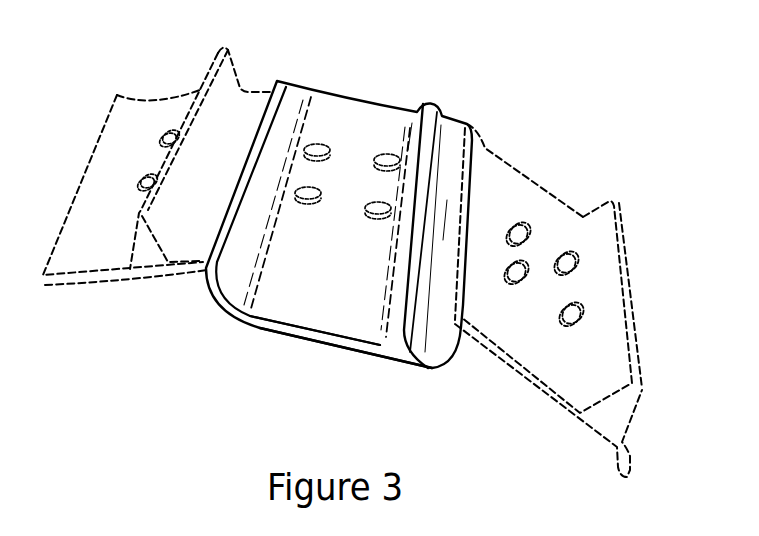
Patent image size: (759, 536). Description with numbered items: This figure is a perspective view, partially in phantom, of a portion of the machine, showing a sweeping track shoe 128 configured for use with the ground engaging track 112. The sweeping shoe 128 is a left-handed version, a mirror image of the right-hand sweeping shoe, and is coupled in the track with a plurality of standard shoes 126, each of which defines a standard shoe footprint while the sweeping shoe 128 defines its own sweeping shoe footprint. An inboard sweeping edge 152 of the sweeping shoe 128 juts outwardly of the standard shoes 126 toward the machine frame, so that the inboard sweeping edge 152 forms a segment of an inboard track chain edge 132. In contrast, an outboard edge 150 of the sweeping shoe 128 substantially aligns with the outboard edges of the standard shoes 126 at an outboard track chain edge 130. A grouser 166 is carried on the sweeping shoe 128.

The ground engaging track 112 is at (538, 178).
The standard shoes 126 is at (87, 287).
The sweeping track shoe 128 is at (332, 115).
The outboard track chain edge 130 is at (503, 163).
The inboard track chain edge 132 is at (501, 366).
The outboard edge 150 is at (316, 99).
The inboard sweeping edge 152 is at (309, 345).
The grouser 166 is at (411, 265).